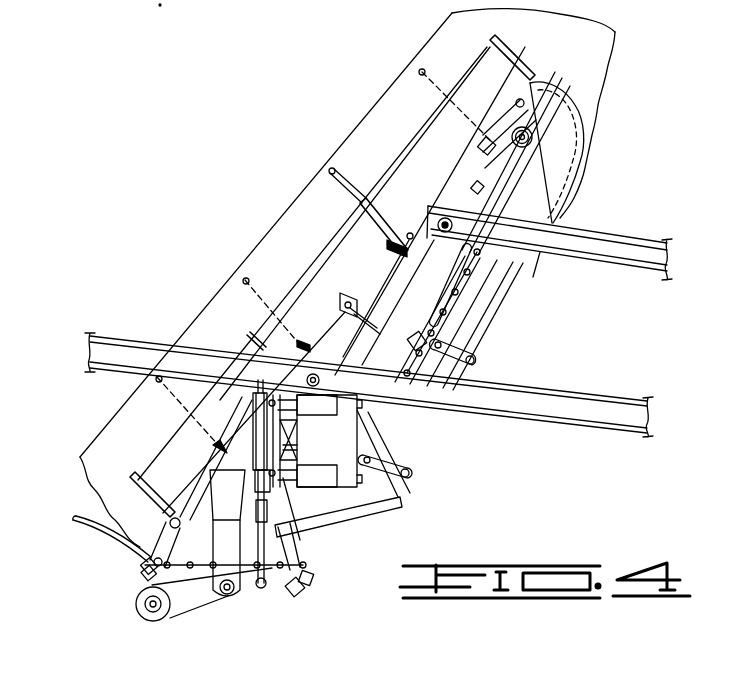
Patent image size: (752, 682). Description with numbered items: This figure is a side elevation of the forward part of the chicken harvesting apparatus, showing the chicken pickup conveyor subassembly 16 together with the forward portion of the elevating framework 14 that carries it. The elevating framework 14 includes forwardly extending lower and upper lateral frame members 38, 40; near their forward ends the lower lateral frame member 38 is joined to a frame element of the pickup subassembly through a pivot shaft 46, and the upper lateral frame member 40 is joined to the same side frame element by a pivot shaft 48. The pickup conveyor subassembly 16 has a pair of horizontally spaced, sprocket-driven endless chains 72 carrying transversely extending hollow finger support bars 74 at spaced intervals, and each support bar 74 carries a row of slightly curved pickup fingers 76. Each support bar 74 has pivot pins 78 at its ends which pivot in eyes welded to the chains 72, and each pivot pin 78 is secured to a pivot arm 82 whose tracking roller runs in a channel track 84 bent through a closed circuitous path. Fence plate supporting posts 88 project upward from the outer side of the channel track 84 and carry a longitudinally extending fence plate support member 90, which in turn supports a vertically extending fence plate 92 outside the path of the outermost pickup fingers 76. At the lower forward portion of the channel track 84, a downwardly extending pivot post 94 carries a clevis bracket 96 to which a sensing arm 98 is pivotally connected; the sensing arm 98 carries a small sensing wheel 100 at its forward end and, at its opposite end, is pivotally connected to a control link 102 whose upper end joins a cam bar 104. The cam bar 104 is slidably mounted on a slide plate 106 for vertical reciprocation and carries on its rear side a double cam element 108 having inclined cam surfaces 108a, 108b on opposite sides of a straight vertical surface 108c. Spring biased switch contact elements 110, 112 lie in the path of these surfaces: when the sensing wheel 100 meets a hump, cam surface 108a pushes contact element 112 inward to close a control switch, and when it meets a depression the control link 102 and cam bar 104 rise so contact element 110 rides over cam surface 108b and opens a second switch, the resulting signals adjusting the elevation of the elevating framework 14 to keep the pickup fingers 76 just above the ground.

The elevating framework 14 is at (620, 278).
The chicken pickup conveyor subassembly 16 is at (427, 483).
The lower lateral frame member 38 is at (580, 404).
The upper lateral frame member 40 is at (600, 246).
The pivot shaft 46 is at (319, 381).
The pivot shaft 48 is at (452, 226).
The endless chain 72 is at (512, 273).
The finger support bar 74 is at (416, 336).
The pickup finger 76 is at (475, 297).
The pivot pin 78 is at (478, 352).
The pivot arm 82 is at (520, 78).
The channel track 84 is at (466, 170).
The fence plate supporting post 88 is at (518, 58).
The fence plate support member 90 is at (490, 62).
The fence plate 92 is at (326, 231).
The pivot post 94 is at (222, 548).
The clevis bracket 96 is at (220, 600).
The sensing arm 98 is at (190, 612).
The sensing wheel 100 is at (155, 625).
The control link 102 is at (270, 575).
The cam bar 104 is at (258, 405).
The slide plate 106 is at (242, 395).
The double cam element 108 is at (290, 430).
The inclined cam surface 108a is at (268, 458).
The inclined cam surface 108b is at (276, 425).
The straight vertical surface 108c is at (290, 448).
The spring biased switch contact element 110 is at (280, 393).
The spring biased switch contact element 112 is at (283, 478).